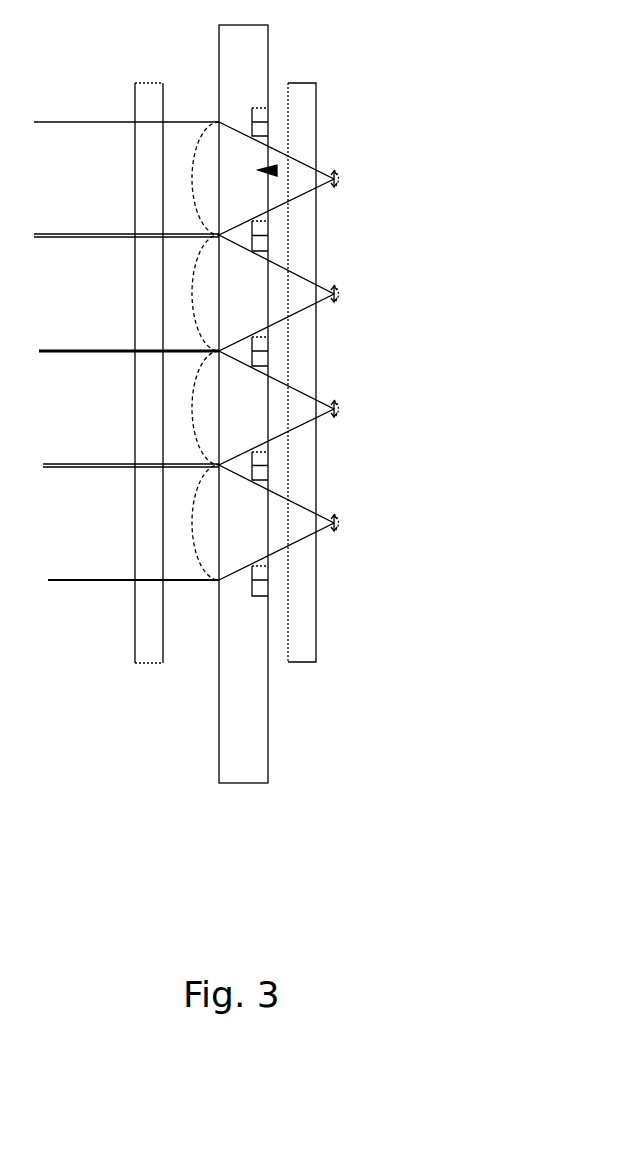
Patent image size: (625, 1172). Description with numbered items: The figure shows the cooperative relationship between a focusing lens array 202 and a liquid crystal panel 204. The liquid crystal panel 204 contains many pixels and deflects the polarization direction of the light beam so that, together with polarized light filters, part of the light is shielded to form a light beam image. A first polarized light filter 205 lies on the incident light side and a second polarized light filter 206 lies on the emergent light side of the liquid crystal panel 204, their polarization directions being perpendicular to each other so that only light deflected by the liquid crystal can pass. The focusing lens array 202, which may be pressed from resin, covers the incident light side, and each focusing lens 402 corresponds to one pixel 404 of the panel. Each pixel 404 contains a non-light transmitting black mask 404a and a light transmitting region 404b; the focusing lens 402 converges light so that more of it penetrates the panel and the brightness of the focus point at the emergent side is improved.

The focusing lens array 202 is at (197, 586).
The liquid crystal panel 204 is at (249, 778).
The first polarized light filter 205 is at (142, 650).
The second polarized light filter 206 is at (291, 663).
The focusing lens 402 is at (202, 220).
The pixel 404 is at (356, 352).
The non-light transmitting black mask 404a is at (262, 128).
The light transmitting region 404b is at (277, 170).